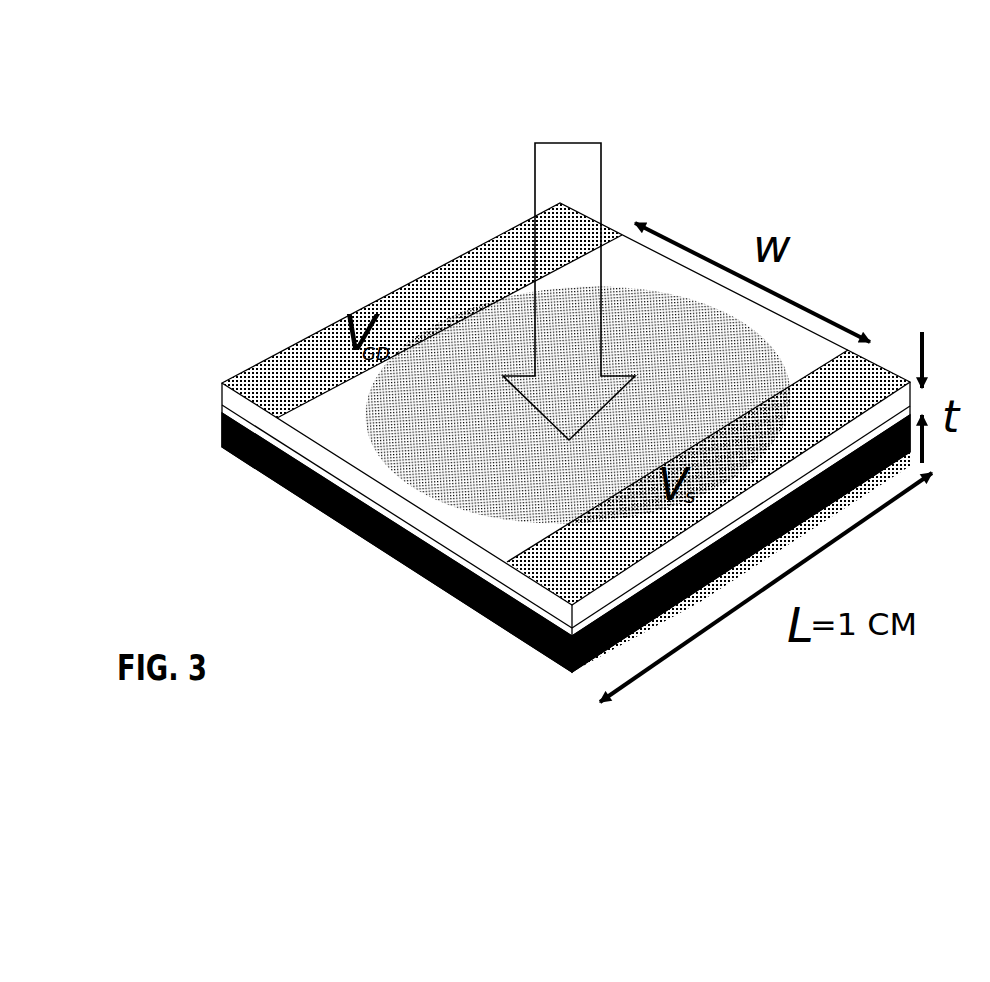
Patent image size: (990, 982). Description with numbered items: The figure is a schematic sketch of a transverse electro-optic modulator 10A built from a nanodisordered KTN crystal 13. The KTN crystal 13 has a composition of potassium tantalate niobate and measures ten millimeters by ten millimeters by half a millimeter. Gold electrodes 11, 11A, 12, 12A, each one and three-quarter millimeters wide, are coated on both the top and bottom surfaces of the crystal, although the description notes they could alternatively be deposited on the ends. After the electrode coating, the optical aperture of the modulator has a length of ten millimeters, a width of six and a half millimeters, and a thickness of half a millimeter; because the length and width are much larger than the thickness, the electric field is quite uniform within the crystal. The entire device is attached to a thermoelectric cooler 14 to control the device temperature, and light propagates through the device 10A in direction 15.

The transverse EO modulator 10A is at (265, 190).
The gold electrode 11 is at (422, 310).
The gold electrode 11A is at (223, 420).
The gold electrode 12 is at (708, 477).
The gold electrode 12A is at (667, 592).
The KTN crystal 13 is at (370, 462).
The thermoelectric cooler 14 is at (505, 637).
The light propagation direction 15 is at (568, 148).